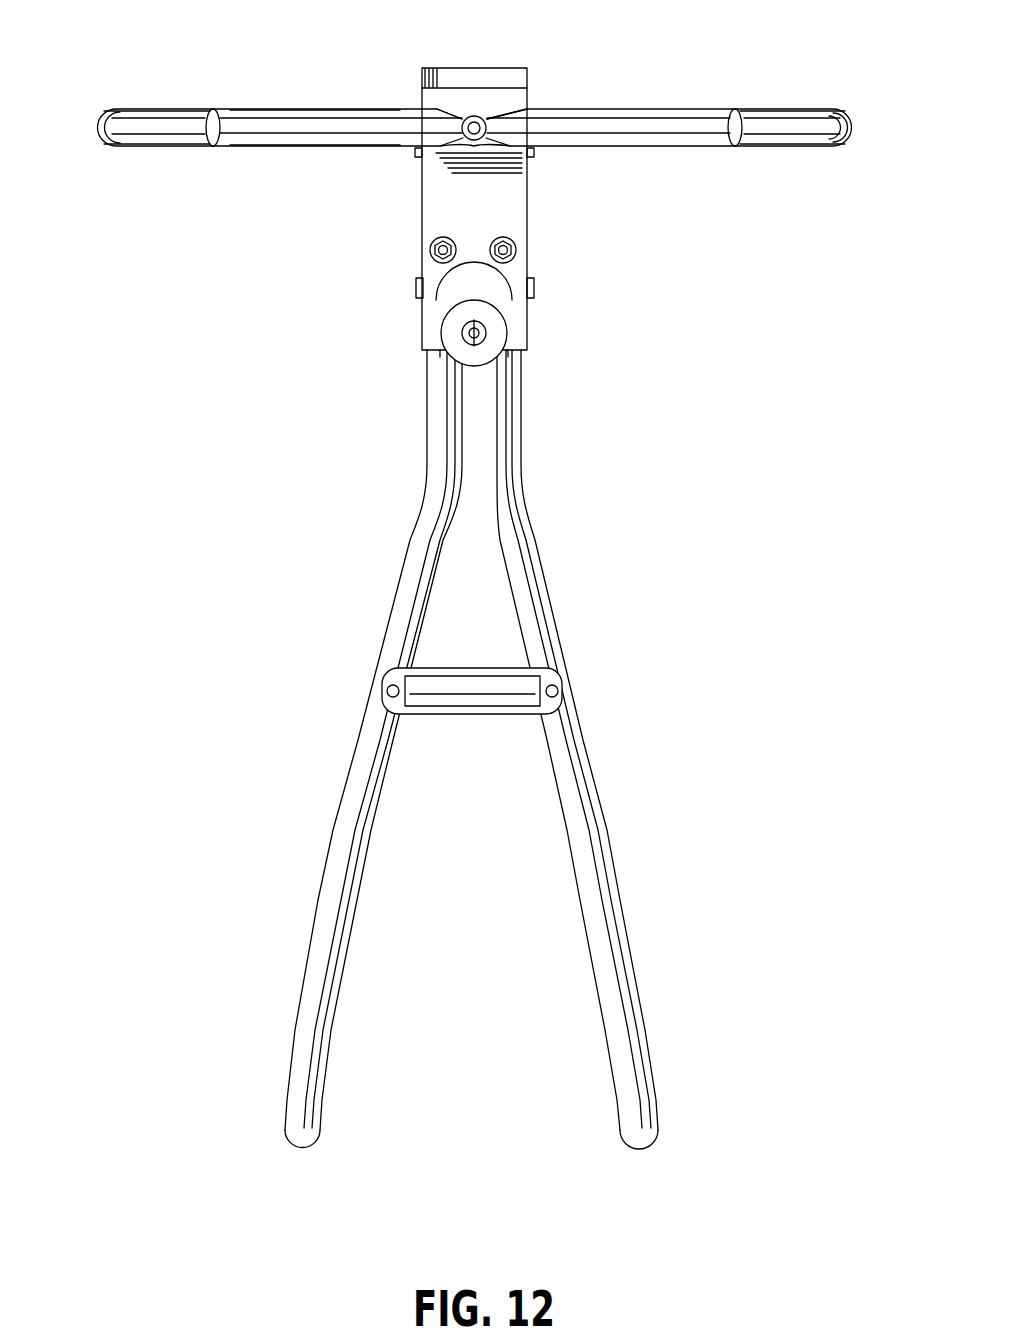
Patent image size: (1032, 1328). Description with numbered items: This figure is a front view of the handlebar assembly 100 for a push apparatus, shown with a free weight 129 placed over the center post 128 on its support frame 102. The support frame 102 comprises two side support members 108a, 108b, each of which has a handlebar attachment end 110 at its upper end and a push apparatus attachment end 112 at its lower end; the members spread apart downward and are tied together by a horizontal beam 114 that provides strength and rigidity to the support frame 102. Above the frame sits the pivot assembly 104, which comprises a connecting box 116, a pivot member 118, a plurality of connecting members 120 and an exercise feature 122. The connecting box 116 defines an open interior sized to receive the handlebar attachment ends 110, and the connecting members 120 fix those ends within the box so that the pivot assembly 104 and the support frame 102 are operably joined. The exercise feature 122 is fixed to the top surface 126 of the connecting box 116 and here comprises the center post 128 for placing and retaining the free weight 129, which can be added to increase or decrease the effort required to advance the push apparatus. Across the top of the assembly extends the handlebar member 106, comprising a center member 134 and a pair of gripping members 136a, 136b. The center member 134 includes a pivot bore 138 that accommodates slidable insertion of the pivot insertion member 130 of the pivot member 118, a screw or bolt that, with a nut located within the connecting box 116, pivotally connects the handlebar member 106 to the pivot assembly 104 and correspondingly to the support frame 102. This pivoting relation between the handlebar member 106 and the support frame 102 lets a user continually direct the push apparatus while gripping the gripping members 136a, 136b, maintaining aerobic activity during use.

The handlebar assembly 100 is at (225, 548).
The support frame 102 is at (550, 583).
The pivot assembly 104 is at (502, 188).
The handlebar member 106 is at (650, 109).
The side support member 108a is at (338, 823).
The side support member 108b is at (605, 818).
The handlebar attachment end 110 is at (440, 357).
The push apparatus attachment end 112 is at (302, 1148).
The horizontal beam 114 is at (462, 720).
The connecting box 116 is at (527, 341).
The pivot member 118 is at (481, 116).
The connecting members 120 is at (420, 157).
The exercise feature 122 is at (420, 337).
The top surface 126 is at (420, 315).
The center post 128 is at (520, 353).
The free weight 129 is at (474, 340).
The pivot insertion member 130 is at (463, 118).
The center member 134 is at (268, 124).
The gripping member 136a is at (155, 148).
The gripping member 136b is at (786, 122).
The pivot bore 138 is at (398, 141).